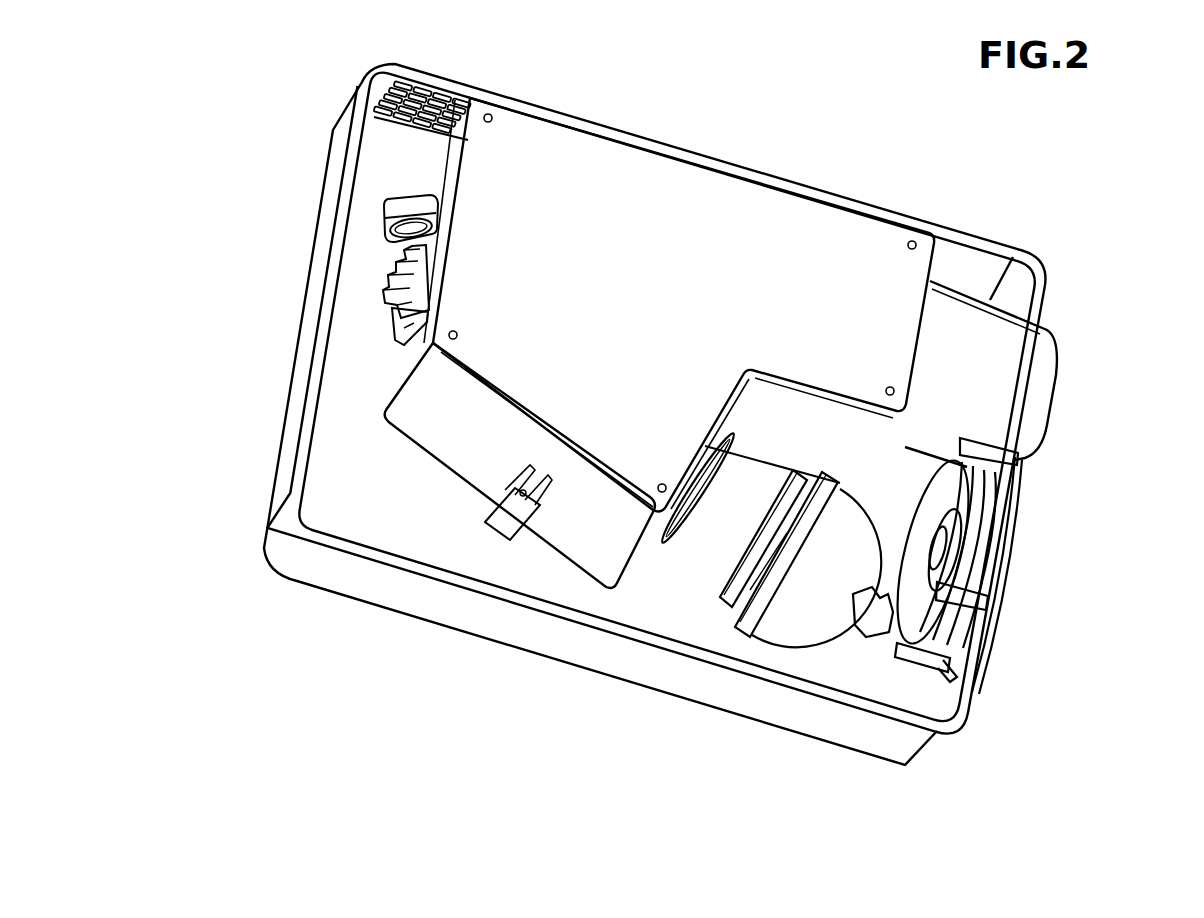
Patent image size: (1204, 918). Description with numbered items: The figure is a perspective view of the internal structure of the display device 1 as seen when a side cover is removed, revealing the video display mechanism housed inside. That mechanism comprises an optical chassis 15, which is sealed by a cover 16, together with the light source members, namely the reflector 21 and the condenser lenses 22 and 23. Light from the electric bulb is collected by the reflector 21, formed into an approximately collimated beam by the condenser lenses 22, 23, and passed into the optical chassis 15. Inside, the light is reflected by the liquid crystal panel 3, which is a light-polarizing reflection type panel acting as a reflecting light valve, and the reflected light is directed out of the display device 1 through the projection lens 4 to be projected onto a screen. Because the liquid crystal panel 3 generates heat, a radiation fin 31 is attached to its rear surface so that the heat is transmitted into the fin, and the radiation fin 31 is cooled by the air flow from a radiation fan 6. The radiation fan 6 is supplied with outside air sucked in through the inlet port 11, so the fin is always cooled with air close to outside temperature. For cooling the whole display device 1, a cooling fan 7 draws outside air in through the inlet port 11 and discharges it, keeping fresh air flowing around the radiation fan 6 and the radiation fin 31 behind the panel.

The display device 1 is at (440, 613).
The inlet port 11 is at (421, 82).
The cover 16 is at (717, 233).
The radiation fan 6 is at (410, 200).
The radiation fin 31 is at (397, 273).
The liquid crystal panel 3 is at (397, 320).
The projection lens 4 is at (1017, 368).
The cooling fan 7 is at (985, 495).
The optical chassis 15 is at (595, 522).
The condenser lens 23 is at (693, 530).
The condenser lens 22 is at (745, 576).
The reflector 21 is at (817, 613).